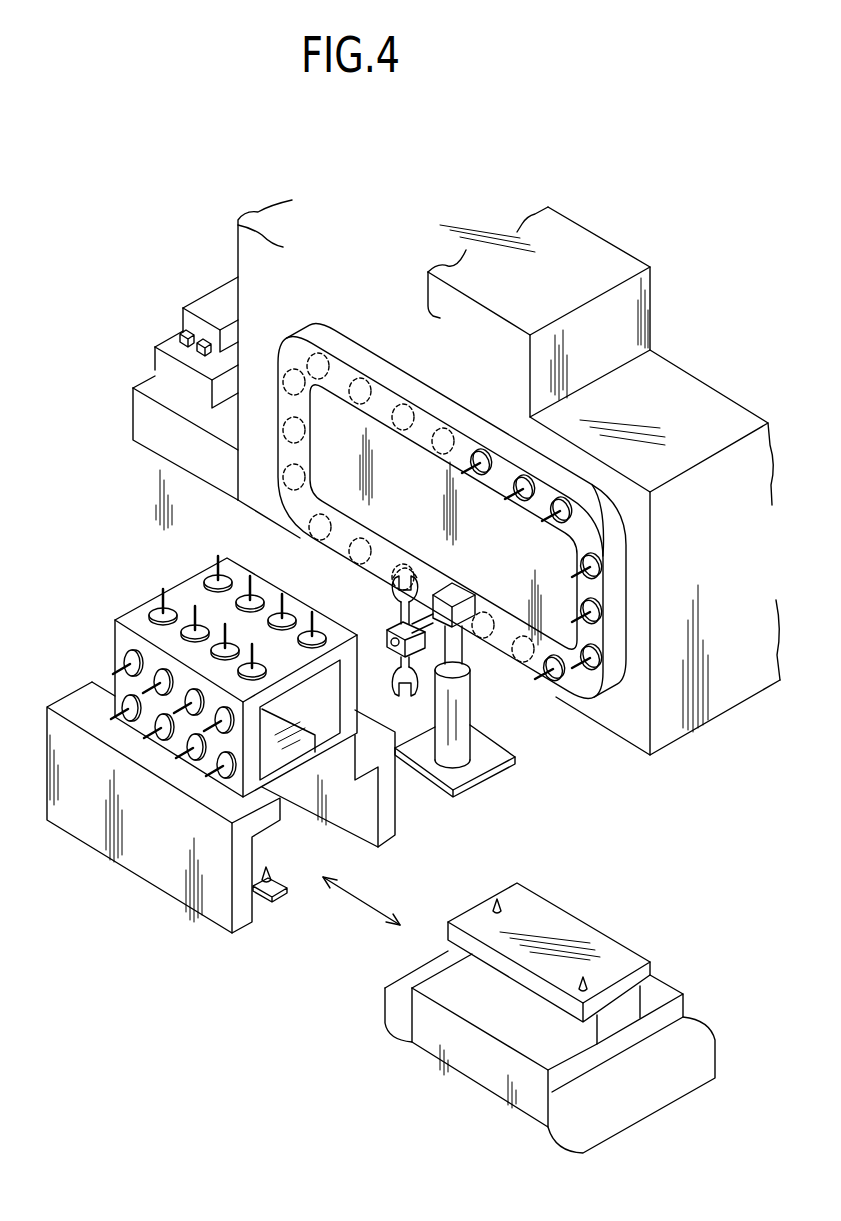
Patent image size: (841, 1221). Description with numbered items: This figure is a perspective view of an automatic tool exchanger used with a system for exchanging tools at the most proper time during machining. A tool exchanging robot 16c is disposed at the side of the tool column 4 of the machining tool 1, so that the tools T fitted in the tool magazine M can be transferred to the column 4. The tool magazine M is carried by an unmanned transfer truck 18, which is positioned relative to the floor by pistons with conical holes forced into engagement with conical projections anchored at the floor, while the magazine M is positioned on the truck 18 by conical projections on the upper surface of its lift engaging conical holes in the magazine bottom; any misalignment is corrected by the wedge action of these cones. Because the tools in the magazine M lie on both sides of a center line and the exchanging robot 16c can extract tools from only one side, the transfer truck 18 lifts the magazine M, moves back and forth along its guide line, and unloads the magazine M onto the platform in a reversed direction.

The machining tool 1 is at (440, 318).
The tool column 4 is at (583, 540).
The tool magazine M is at (145, 612).
The tools T is at (115, 647).
The tool exchanging robot 16c is at (452, 708).
The unmanned transfer truck 18 is at (493, 1025).